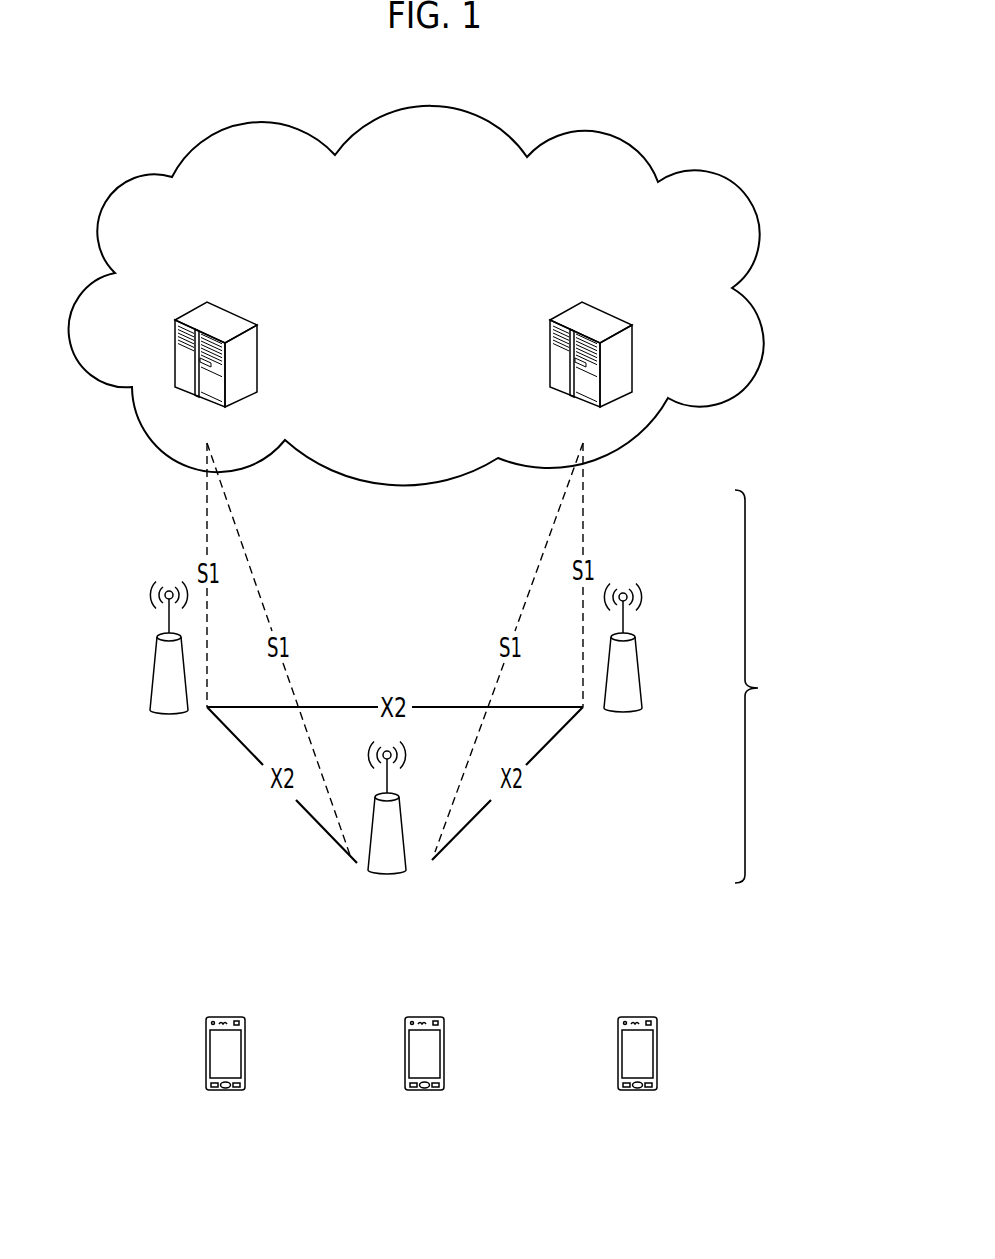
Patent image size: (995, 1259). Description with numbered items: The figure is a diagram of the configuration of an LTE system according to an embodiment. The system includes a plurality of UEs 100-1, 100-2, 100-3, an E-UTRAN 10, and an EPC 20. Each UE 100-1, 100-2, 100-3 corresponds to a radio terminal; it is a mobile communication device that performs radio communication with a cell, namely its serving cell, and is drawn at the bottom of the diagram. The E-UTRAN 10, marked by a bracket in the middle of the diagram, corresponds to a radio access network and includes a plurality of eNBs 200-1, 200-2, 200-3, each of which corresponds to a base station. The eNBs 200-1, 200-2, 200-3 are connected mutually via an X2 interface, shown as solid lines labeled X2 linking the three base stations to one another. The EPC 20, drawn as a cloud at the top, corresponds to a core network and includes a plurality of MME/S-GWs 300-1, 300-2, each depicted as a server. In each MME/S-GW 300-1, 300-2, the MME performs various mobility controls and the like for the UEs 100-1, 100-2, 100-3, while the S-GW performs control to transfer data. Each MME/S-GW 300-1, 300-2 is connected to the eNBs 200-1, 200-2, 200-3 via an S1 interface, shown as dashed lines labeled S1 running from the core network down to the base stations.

The E-UTRAN 10 is at (798, 686).
The EPC 20 is at (636, 142).
The UE 100-1 is at (263, 988).
The UE 100-2 is at (437, 1015).
The UE 100-3 is at (649, 1015).
The eNB 200-1 is at (152, 673).
The eNB 200-2 is at (405, 842).
The eNB 200-3 is at (638, 652).
The MME/S-GW 300-1 is at (242, 318).
The MME/S-GW 300-2 is at (605, 314).